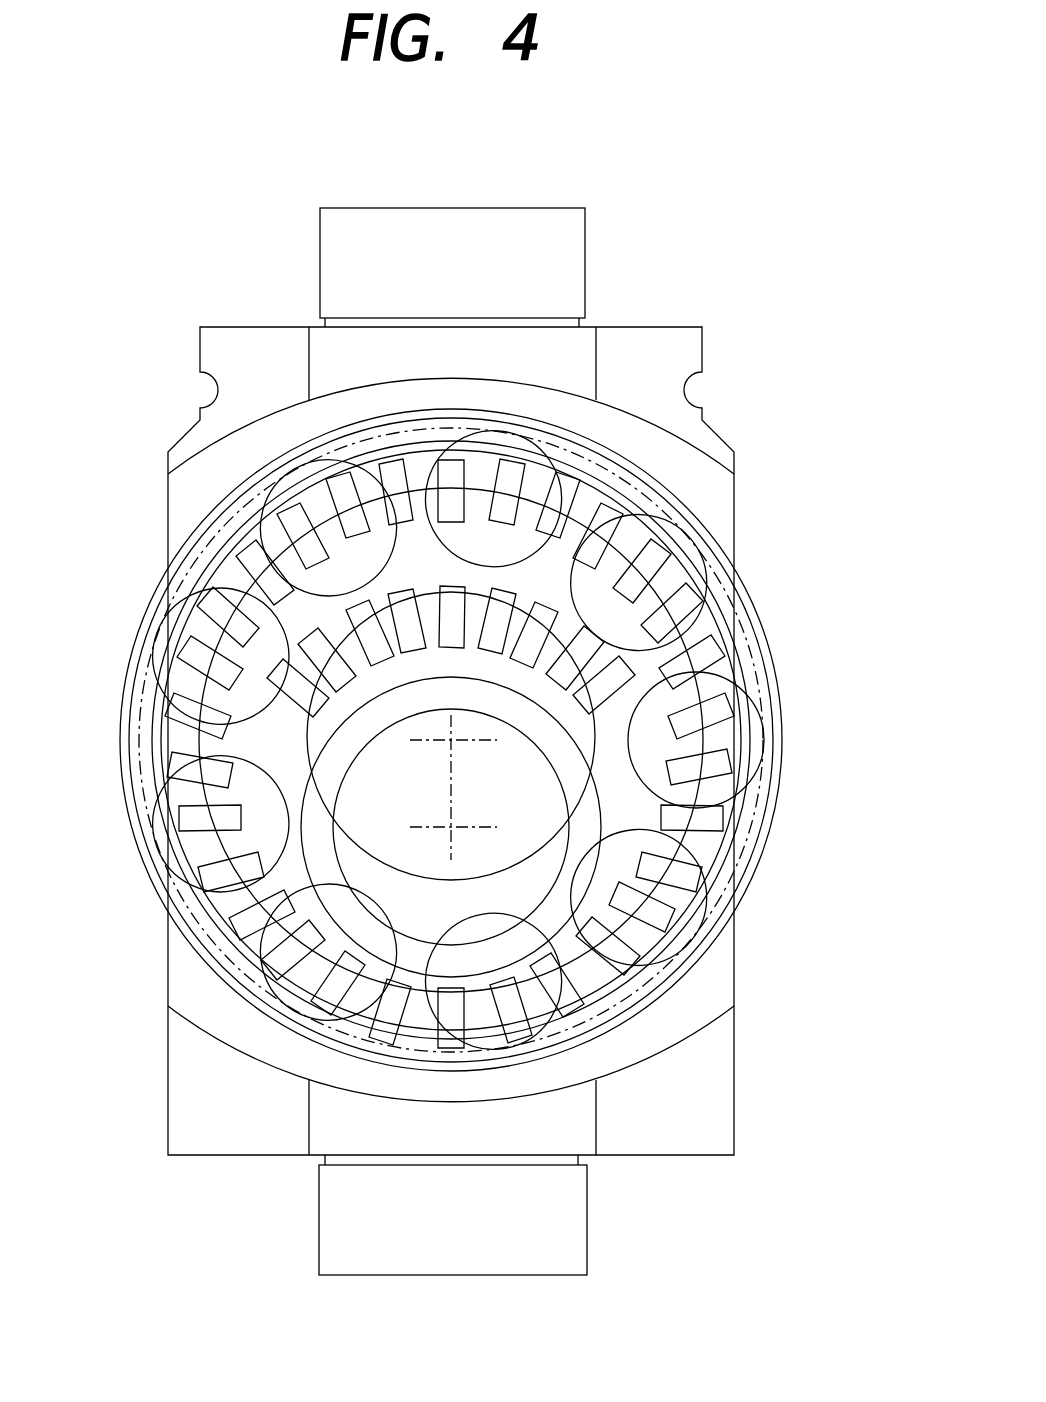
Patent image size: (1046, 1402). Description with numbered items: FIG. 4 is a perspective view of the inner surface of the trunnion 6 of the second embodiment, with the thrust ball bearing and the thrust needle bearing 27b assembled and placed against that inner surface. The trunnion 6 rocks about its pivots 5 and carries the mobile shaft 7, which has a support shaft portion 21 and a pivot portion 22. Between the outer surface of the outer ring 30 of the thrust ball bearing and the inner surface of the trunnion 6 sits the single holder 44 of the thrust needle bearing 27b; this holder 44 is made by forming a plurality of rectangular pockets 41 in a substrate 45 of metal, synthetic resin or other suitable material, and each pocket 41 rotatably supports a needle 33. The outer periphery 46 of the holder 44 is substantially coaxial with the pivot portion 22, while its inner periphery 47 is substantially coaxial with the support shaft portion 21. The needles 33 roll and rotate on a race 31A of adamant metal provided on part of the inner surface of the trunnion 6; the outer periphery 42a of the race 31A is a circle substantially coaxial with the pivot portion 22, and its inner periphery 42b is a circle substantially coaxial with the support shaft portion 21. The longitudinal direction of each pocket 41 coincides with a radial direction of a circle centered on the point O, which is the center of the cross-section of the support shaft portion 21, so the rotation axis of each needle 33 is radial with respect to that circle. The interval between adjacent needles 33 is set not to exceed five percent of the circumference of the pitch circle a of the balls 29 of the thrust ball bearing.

The pivot 5 is at (560, 230).
The trunnion 6 is at (710, 1094).
The mobile shaft 7 is at (230, 903).
The support shaft portion 21 is at (330, 918).
The pivot portion 22 is at (334, 756).
The thrust needle bearing 27b is at (740, 670).
The ball 29 is at (128, 702).
The outer ring 30 is at (740, 503).
The race 31A is at (372, 445).
The needle 33 is at (512, 474).
The pocket 41 is at (350, 590).
The outer periphery of the race 42a is at (757, 637).
The inner periphery of the race 42b is at (478, 940).
The holder 44 is at (233, 572).
The substrate 45 is at (660, 972).
The outer periphery of the holder 46 is at (200, 585).
The inner periphery of the holder 47 is at (327, 1043).
The point O is at (456, 823).
The pitch circle a is at (703, 562).